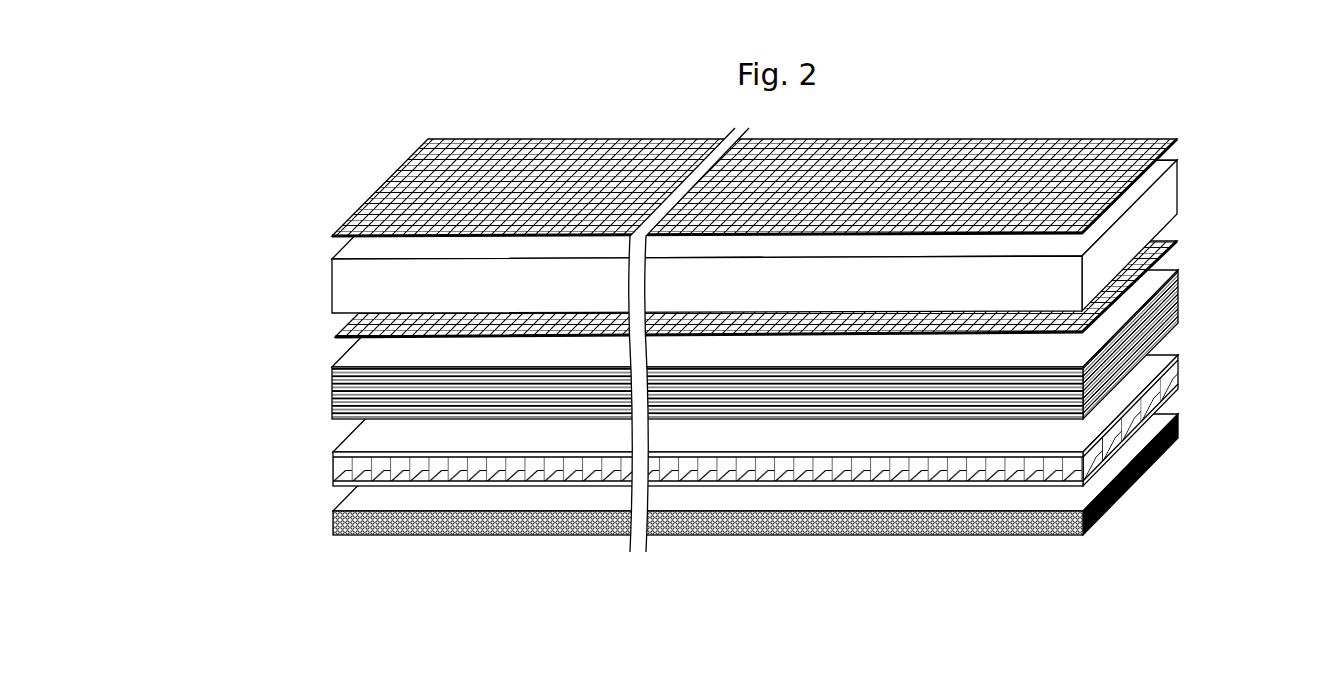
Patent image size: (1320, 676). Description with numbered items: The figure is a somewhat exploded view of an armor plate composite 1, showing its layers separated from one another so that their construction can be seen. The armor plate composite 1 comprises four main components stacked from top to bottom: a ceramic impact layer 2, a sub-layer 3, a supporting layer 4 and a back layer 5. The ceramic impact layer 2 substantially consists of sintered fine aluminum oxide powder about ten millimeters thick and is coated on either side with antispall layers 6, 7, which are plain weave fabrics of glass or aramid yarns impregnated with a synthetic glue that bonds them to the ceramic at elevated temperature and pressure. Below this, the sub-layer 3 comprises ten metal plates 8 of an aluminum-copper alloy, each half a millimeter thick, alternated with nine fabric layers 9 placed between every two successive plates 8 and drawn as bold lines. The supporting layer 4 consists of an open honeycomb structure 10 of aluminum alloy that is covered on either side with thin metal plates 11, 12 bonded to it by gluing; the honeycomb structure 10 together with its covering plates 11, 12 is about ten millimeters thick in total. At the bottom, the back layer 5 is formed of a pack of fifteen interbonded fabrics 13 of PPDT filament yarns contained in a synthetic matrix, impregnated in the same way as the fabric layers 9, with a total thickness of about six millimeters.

The armor plate composite 1 is at (764, 324).
The ceramic impact layer 2 is at (1167, 195).
The sub-layer 3 is at (721, 345).
The supporting layer 4 is at (748, 420).
The back layer 5 is at (749, 488).
The antispall layer 6 is at (754, 160).
The antispall layer 7 is at (1162, 251).
The metal plate 8 is at (1178, 270).
The fabric layer 9 is at (332, 367).
The honeycomb structure 10 is at (1153, 394).
The covering plate 11 is at (1178, 361).
The covering plate 12 is at (1140, 424).
The fabric 13 is at (997, 528).